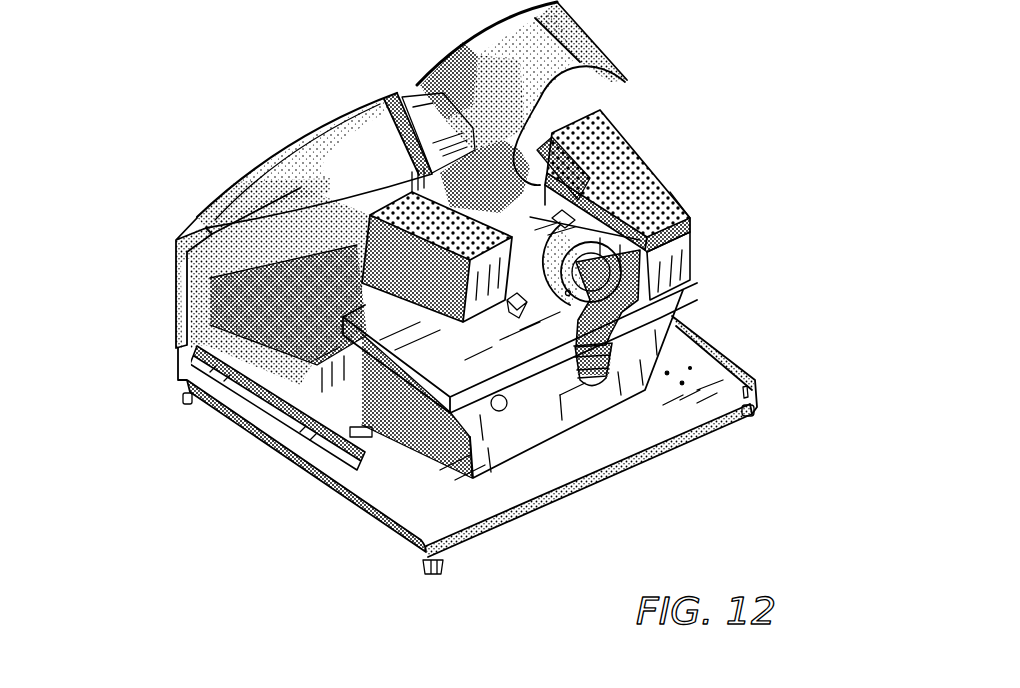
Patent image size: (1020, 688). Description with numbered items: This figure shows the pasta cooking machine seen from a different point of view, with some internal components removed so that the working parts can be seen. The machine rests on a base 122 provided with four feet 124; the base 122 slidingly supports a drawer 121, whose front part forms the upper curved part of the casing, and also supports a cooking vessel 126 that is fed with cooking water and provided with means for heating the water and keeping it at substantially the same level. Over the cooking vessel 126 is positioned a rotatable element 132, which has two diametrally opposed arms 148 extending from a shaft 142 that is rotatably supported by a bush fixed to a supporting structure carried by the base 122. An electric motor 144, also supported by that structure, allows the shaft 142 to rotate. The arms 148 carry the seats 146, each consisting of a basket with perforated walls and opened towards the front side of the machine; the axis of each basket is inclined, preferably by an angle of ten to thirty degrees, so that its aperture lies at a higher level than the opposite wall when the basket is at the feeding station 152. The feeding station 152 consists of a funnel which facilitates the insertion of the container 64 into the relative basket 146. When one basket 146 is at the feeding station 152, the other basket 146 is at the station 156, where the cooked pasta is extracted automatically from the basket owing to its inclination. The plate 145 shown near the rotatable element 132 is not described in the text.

The container 64 is at (680, 238).
The drawer 121 is at (178, 268).
The base 122 is at (317, 487).
The feet 124 is at (188, 398).
The cooking vessel 126 is at (540, 433).
The rotatable element 132 is at (680, 188).
The shaft 142 is at (555, 225).
The electric motor 144 is at (616, 372).
The clamp plate 145 is at (562, 214).
The seats 146 is at (403, 207).
The arms 148 is at (572, 212).
The feeding station 152 is at (572, 62).
The extraction station 156 is at (293, 167).